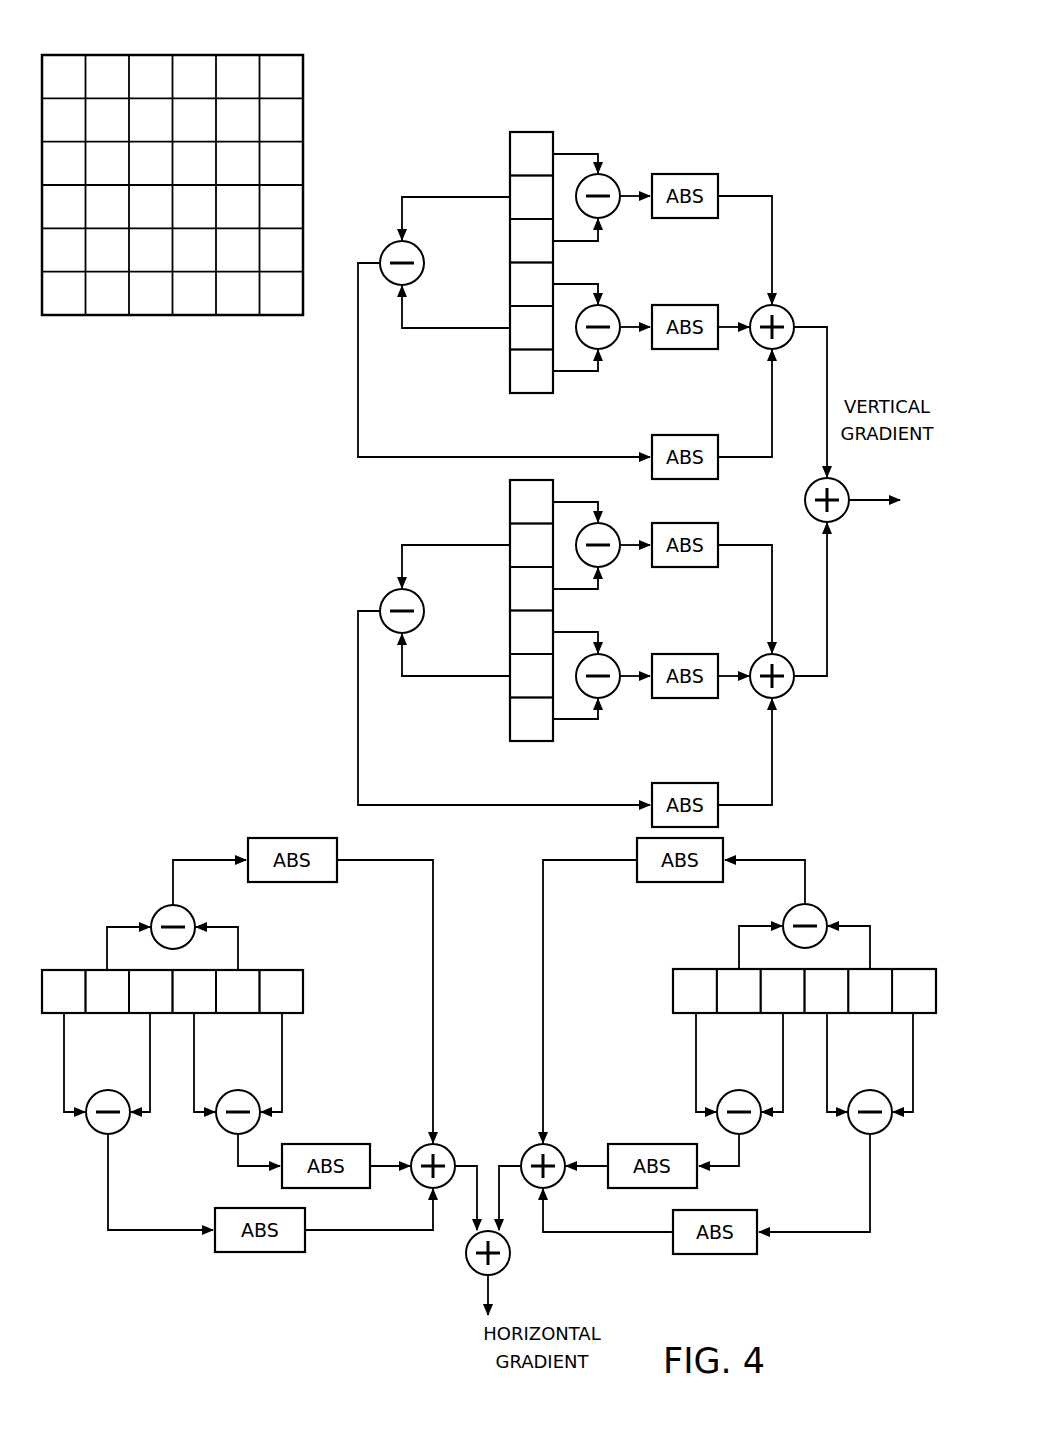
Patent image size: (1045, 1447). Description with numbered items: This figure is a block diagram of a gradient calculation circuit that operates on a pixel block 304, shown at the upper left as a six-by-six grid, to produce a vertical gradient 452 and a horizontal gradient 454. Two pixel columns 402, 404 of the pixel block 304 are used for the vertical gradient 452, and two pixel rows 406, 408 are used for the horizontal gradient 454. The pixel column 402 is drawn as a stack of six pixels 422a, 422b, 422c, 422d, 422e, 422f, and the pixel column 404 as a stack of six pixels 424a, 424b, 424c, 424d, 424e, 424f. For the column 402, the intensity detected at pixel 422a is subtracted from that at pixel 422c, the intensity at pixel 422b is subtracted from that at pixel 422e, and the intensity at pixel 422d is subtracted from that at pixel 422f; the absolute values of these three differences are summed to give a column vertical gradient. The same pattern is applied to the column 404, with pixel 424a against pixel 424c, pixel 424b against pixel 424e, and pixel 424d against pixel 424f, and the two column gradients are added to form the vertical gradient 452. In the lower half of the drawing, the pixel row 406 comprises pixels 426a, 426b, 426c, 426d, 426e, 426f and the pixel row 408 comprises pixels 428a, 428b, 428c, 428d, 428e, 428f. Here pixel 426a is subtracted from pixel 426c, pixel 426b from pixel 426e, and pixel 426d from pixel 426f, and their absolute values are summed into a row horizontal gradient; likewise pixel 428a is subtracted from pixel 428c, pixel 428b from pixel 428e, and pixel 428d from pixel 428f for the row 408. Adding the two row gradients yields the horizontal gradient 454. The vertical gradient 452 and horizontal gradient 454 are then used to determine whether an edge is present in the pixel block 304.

The pixel block 304 is at (307, 116).
The pixel column 402 is at (168, 40).
The pixel column 404 is at (212, 40).
The pixel row 406 is at (310, 142).
The pixel row 408 is at (310, 186).
The pixel 422a is at (518, 142).
The pixel 422b is at (518, 186).
The pixel 422c is at (518, 229).
The pixel 422d is at (518, 294).
The pixel 422e is at (518, 338).
The pixel 422f is at (518, 381).
The pixel 424a is at (518, 490).
The pixel 424b is at (518, 534).
The pixel 424c is at (518, 577).
The pixel 424d is at (518, 644).
The pixel 424e is at (518, 688).
The pixel 424f is at (518, 731).
The pixel 426a is at (78, 1005).
The pixel 426b is at (98, 978).
The pixel 426c is at (153, 1003).
The pixel 426d is at (208, 1005).
The pixel 426e is at (248, 978).
The pixel 426f is at (297, 993).
The pixel 428a is at (680, 993).
The pixel 428b is at (730, 978).
The pixel 428c is at (767, 1005).
The pixel 428d is at (823, 1003).
The pixel 428e is at (878, 978).
The pixel 428f is at (897, 1005).
The vertical gradient 452 is at (873, 500).
The horizontal gradient 454 is at (492, 1290).